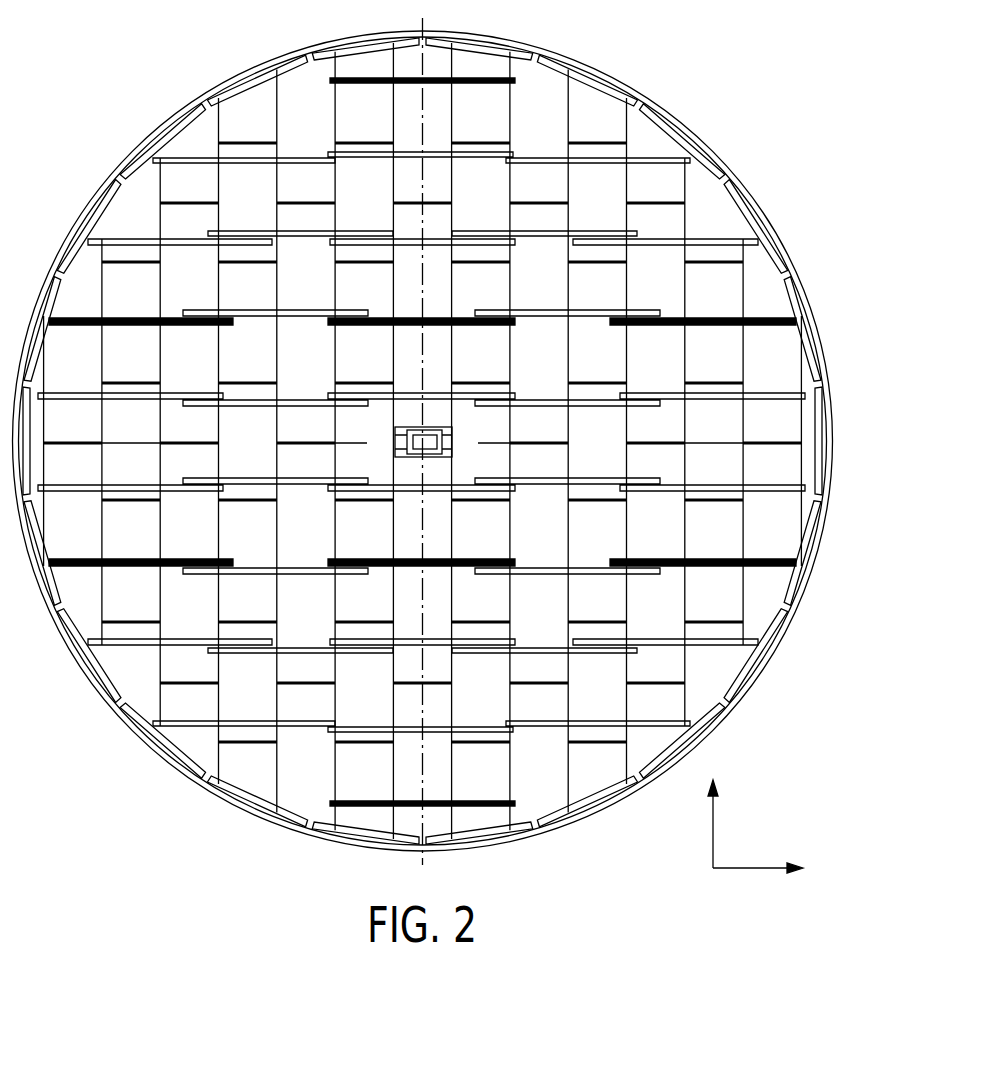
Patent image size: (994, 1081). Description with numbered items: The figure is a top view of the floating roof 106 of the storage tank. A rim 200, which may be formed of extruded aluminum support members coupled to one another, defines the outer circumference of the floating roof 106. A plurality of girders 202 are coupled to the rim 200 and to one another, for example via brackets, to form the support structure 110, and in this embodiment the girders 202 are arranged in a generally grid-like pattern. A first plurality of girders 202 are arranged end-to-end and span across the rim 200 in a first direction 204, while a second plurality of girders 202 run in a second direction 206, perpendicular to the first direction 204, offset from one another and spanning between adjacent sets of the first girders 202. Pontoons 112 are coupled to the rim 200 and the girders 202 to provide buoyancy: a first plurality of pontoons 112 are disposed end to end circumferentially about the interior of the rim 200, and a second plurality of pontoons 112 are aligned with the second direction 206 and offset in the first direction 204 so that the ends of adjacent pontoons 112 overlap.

The rim 200 is at (70, 229).
The floating roof 106 is at (595, 68).
The pontoons 112 is at (672, 130).
The support structure 110 is at (687, 220).
The girders 202 is at (743, 595).
The first direction 204 is at (713, 834).
The second direction 206 is at (748, 868).